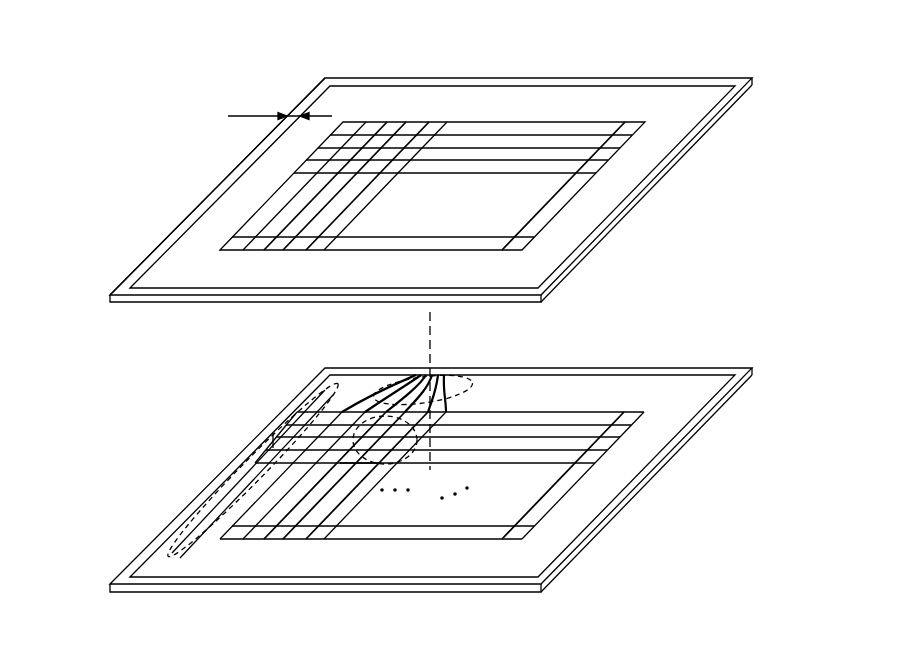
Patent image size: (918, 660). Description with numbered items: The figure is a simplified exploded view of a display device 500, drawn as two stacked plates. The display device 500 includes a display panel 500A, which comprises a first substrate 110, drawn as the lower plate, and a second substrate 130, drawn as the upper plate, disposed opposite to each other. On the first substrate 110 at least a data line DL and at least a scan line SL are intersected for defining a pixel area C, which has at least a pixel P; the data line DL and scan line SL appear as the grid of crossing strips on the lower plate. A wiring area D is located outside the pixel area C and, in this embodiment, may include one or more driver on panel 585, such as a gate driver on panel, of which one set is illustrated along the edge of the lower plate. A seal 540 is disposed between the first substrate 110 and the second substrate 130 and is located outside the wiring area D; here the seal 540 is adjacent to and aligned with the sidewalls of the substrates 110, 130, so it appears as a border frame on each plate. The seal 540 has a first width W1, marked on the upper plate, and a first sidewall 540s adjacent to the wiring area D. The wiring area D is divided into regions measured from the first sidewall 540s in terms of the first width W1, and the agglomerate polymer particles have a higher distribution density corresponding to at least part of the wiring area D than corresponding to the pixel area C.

The display device 500 is at (87, 67).
The display panel 500A is at (172, 152).
The second substrate 130 is at (645, 195).
The first substrate 110 is at (647, 483).
The seal 540 is at (252, 158).
The first sidewall 540s is at (207, 207).
The first width W1 is at (280, 106).
The driver on panel 585 is at (275, 437).
The wiring area D is at (318, 387).
The pixel P is at (355, 423).
The data line DL is at (200, 538).
The scan line SL is at (290, 522).
The pixel area C is at (357, 475).